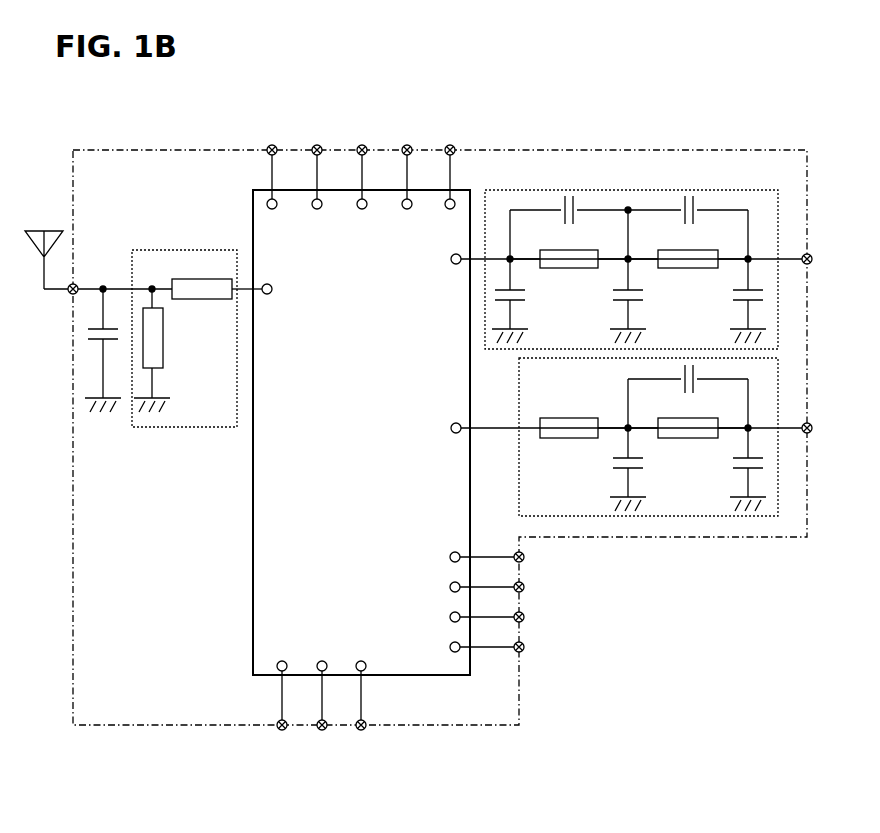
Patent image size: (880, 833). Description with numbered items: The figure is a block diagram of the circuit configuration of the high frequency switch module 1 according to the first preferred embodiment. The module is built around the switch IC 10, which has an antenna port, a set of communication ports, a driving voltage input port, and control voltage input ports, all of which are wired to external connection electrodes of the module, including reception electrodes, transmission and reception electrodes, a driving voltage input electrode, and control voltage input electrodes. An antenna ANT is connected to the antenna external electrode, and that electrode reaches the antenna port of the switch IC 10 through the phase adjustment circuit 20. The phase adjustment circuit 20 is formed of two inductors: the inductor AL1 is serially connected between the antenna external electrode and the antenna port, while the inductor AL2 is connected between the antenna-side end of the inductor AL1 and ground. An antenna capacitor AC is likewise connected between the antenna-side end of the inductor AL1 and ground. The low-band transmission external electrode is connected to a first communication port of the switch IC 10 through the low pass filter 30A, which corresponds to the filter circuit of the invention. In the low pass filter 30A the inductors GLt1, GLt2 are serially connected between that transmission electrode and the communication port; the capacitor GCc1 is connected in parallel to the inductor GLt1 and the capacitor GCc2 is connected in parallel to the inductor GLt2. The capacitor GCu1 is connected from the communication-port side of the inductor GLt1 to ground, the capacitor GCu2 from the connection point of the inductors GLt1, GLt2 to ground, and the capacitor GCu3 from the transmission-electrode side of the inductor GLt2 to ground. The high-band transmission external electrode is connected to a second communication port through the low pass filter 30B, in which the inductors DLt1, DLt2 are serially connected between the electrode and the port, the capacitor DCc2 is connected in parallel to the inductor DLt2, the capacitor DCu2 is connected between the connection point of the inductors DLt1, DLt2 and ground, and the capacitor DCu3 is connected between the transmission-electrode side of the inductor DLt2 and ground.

The high frequency switch module 1 is at (92, 150).
The switch IC 10 is at (253, 209).
The phase adjustment circuit 20 is at (152, 427).
The low pass filter 30A is at (778, 190).
The low pass filter 30B is at (519, 516).
The antenna ANT is at (44, 252).
The antenna capacitor AC is at (104, 350).
The inductor AL1 is at (202, 281).
The inductor AL2 is at (163, 350).
The capacitor GCc1 is at (548, 209).
The capacitor GCc2 is at (709, 209).
The inductor GLt1 is at (569, 251).
The inductor GLt2 is at (688, 251).
The capacitor GCu1 is at (521, 316).
The capacitor GCu2 is at (639, 316).
The capacitor GCu3 is at (736, 316).
The capacitor DCc2 is at (708, 379).
The inductor DLt1 is at (569, 420).
The inductor DLt2 is at (688, 420).
The capacitor DCu2 is at (639, 484).
The capacitor DCu3 is at (736, 484).